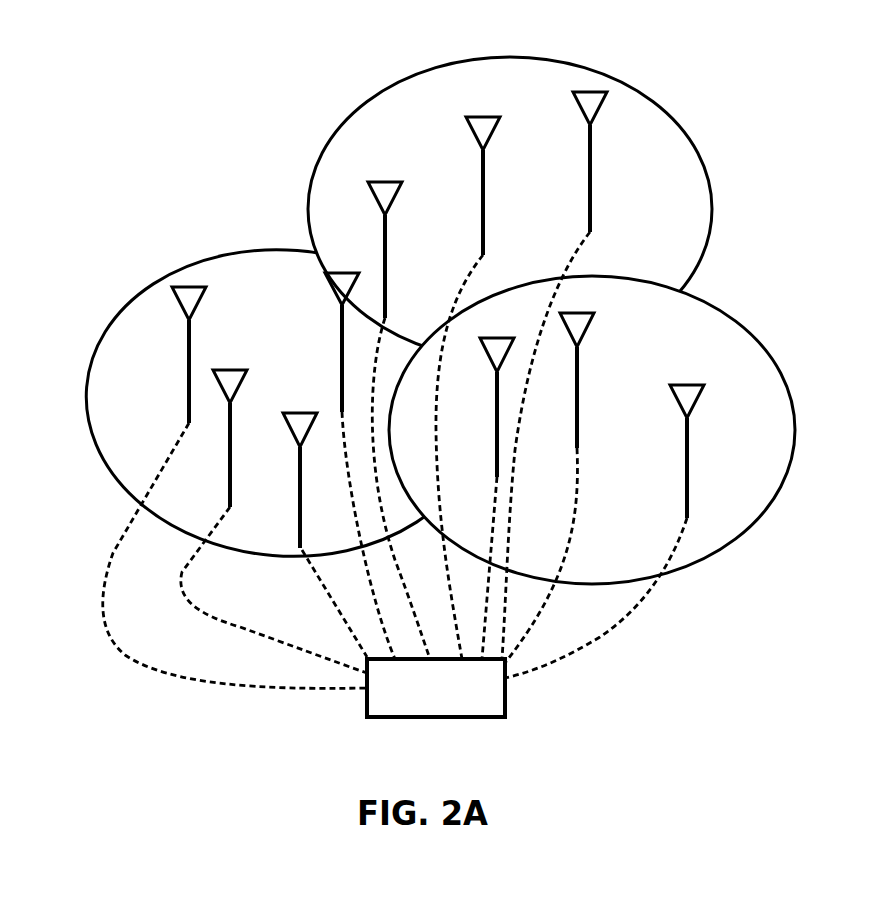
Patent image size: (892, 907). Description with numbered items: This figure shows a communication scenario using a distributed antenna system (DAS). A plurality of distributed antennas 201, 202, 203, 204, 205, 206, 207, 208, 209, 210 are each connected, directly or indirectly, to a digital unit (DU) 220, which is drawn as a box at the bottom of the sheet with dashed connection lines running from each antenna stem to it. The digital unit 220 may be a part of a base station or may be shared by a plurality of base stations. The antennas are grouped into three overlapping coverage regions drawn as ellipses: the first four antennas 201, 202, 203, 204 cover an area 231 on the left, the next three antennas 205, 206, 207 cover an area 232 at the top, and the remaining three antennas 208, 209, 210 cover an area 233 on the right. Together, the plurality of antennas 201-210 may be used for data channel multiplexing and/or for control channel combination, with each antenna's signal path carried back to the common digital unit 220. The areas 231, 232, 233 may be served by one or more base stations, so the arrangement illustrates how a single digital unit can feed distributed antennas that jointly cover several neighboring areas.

The distributed antenna 201 is at (235, 487).
The distributed antenna 202 is at (274, 509).
The distributed antenna 203 is at (324, 524).
The distributed antenna 204 is at (341, 466).
The distributed antenna 205 is at (398, 406).
The distributed antenna 206 is at (470, 374).
The distributed antenna 207 is at (572, 375).
The distributed antenna 208 is at (478, 498).
The distributed antenna 209 is at (576, 488).
The distributed antenna 210 is at (609, 519).
The digital unit 220 is at (415, 717).
The area 231 is at (104, 455).
The area 232 is at (372, 103).
The area 233 is at (767, 358).